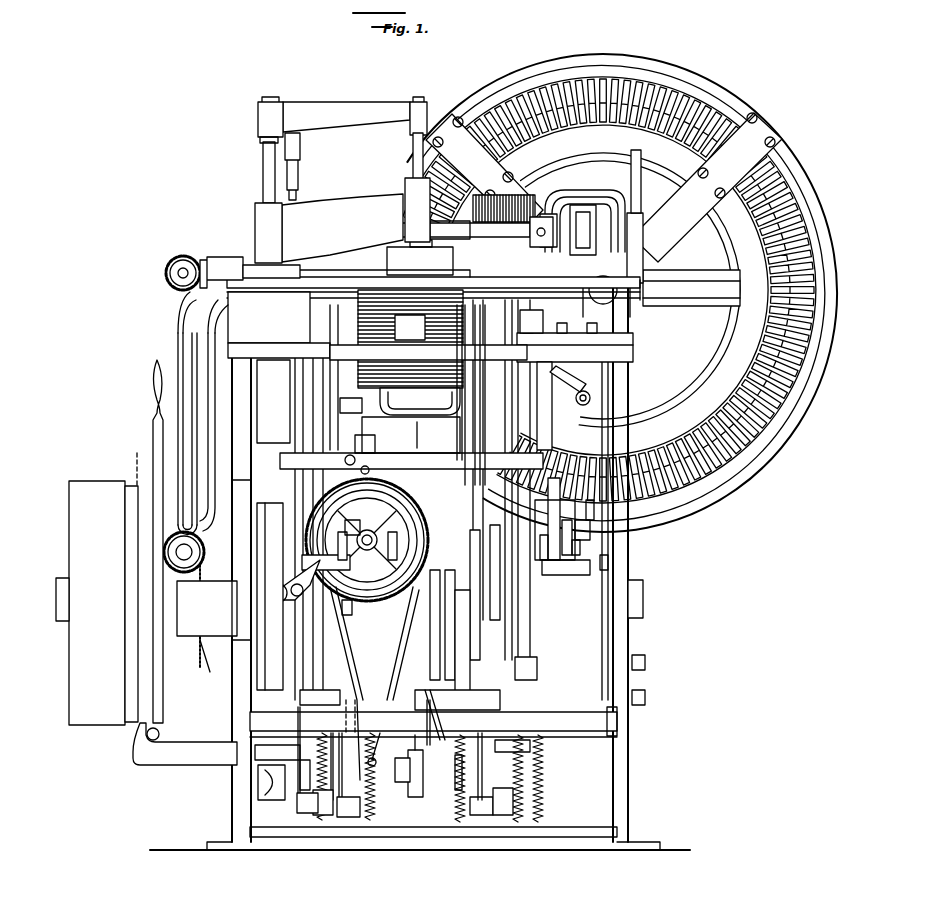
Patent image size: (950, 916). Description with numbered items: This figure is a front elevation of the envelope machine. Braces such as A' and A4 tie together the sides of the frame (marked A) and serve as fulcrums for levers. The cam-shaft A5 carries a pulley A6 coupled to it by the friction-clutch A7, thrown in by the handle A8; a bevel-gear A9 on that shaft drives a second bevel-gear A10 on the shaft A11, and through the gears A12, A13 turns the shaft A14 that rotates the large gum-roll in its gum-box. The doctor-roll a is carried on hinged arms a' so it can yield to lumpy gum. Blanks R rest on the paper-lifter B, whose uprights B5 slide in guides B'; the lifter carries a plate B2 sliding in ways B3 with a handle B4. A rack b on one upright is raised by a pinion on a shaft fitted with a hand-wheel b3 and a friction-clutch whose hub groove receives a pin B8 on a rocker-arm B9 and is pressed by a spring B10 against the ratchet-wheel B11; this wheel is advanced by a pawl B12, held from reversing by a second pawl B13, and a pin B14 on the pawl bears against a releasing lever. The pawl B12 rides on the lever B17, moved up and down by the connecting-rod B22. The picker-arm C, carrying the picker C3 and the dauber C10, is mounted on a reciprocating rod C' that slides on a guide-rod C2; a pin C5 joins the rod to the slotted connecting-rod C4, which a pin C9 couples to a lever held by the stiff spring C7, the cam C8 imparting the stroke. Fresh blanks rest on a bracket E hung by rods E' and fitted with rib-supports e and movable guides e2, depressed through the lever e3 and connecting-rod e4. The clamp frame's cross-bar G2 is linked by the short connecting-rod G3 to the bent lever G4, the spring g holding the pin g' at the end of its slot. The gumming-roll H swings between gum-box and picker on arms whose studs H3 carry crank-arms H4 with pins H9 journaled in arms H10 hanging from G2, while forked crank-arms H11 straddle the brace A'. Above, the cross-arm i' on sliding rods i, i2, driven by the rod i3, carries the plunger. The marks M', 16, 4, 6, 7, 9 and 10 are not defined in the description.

The armature ring wheel M' is at (653, 308).
The picker-arm C is at (582, 209).
The guide-rod C2 is at (643, 190).
The picker C3 is at (434, 260).
The connecting-rod C4 is at (560, 510).
The reciprocating rod C' is at (575, 494).
The pin C5 is at (565, 494).
The stiff spring C7 is at (584, 530).
The cam C8 is at (590, 544).
The pin C9 is at (574, 567).
The dauber C10 is at (390, 272).
The main frame A is at (420, 563).
The brace A' is at (433, 721).
The brace A4 is at (220, 580).
The cam-shaft A5 is at (651, 646).
The pulley A6 is at (100, 480).
The friction-clutch A7 is at (127, 459).
The handle A8 is at (150, 385).
The bevel-gear A9 is at (204, 660).
The second bevel-gear A10 is at (203, 540).
The shaft A11 is at (177, 357).
The gear A12 is at (195, 248).
The gear A13 is at (215, 258).
The shaft A14 is at (279, 325).
The envelope-blanks R is at (410, 339).
The paper-lifter B is at (346, 434).
The guides B' is at (428, 345).
The plate B2 is at (428, 401).
The ways B3 is at (365, 444).
The handle B4 is at (475, 395).
The uprights B5 is at (219, 581).
The pin B8 is at (365, 540).
The rocker-arm B9 is at (440, 555).
The spring B10 is at (334, 497).
The ratchet-wheel B11 is at (467, 590).
The pawl B12 is at (291, 568).
The second pawl B13 is at (486, 557).
The pin B14 is at (272, 585).
The lever B17 is at (318, 690).
The connecting-rod B22 is at (374, 625).
The bracket E is at (456, 390).
The rods E' is at (273, 401).
The rib-supports e is at (411, 435).
The movable guides e2 is at (416, 395).
The lever e3 is at (271, 789).
The connecting-rod e4 is at (425, 715).
The doctor-roll a is at (451, 225).
The arms a' is at (342, 228).
The sliding rod i is at (411, 187).
The cross-arm i' is at (342, 117).
The sliding rod i2 is at (262, 170).
The rod i3 is at (297, 197).
The cross-bar G2 is at (457, 687).
The short connecting-rod G3 is at (426, 748).
The bent lever G4 is at (440, 660).
The spring g is at (381, 759).
The pin g' is at (417, 770).
The gumming-roll H is at (322, 815).
The stud H3 is at (300, 813).
The short crank-arm H4 is at (545, 795).
The pin H9 is at (345, 817).
The arm H10 is at (510, 752).
The second crank-arm H11 is at (277, 750).
The pin 16 is at (361, 447).
The rack b is at (312, 536).
The hand-wheel b3 is at (338, 607).
The pin 4 is at (313, 815).
The screw 6 is at (544, 540).
The screw 7 is at (596, 511).
The screw 9 is at (606, 555).
The pin 10 is at (431, 775).